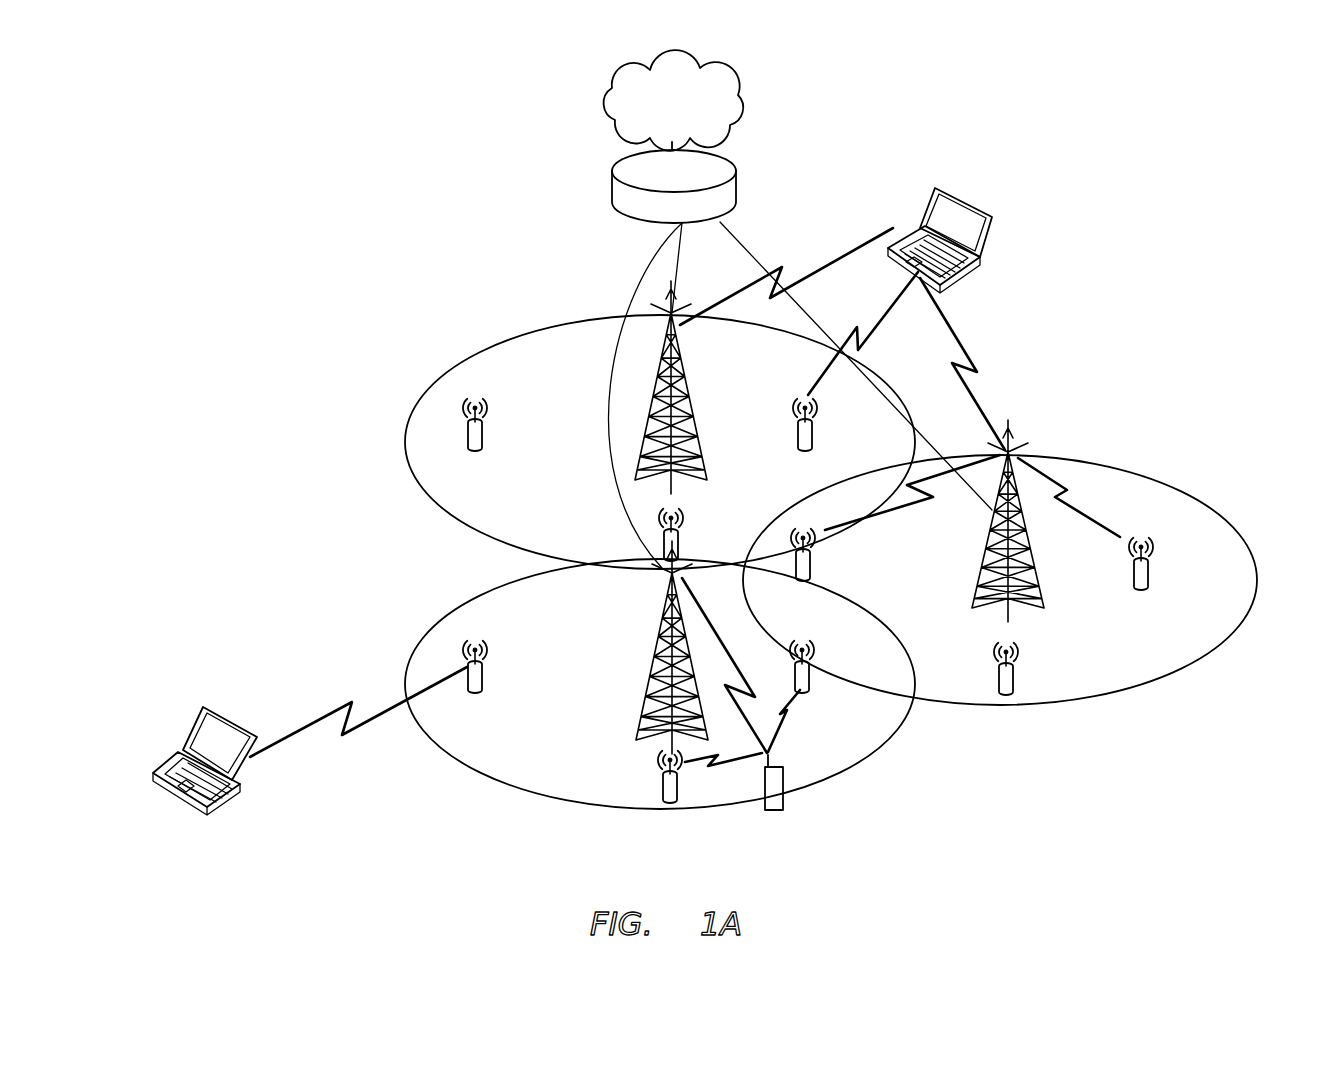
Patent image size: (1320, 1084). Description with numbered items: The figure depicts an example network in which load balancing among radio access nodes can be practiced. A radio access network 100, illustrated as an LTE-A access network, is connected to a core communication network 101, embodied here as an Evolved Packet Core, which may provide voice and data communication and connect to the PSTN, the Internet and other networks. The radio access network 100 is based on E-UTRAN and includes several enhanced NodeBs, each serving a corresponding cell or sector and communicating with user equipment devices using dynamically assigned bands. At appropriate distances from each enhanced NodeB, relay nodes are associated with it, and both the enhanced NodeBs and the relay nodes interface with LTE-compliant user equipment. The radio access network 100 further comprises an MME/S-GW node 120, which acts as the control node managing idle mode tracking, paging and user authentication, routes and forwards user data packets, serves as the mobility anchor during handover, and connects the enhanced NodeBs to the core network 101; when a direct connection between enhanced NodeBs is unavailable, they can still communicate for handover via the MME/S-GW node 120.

The radio access network 100 is at (1107, 198).
The core communication network 101 is at (744, 106).
The MME/S-GW node 120 is at (674, 183).